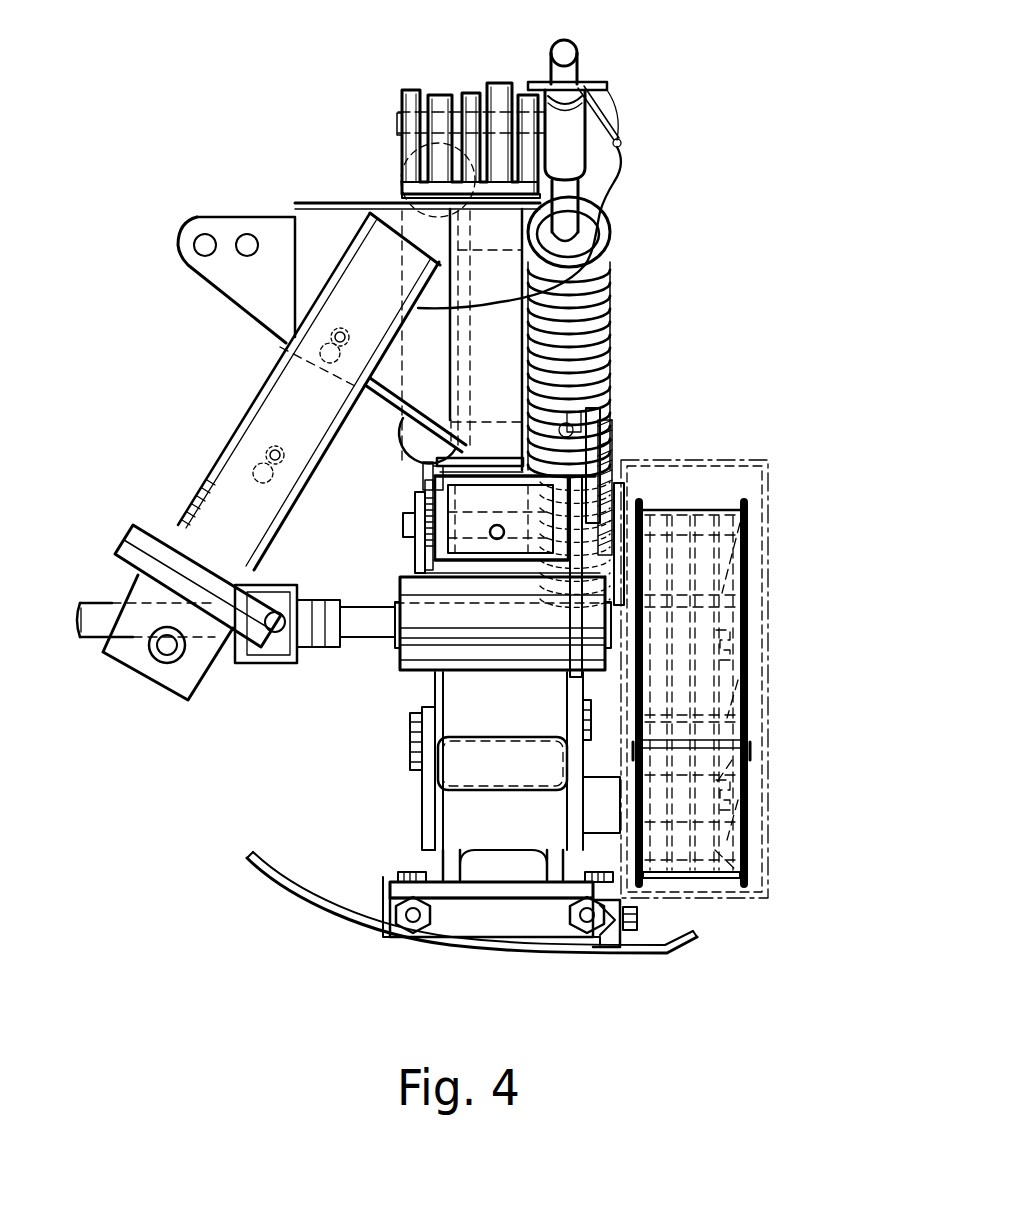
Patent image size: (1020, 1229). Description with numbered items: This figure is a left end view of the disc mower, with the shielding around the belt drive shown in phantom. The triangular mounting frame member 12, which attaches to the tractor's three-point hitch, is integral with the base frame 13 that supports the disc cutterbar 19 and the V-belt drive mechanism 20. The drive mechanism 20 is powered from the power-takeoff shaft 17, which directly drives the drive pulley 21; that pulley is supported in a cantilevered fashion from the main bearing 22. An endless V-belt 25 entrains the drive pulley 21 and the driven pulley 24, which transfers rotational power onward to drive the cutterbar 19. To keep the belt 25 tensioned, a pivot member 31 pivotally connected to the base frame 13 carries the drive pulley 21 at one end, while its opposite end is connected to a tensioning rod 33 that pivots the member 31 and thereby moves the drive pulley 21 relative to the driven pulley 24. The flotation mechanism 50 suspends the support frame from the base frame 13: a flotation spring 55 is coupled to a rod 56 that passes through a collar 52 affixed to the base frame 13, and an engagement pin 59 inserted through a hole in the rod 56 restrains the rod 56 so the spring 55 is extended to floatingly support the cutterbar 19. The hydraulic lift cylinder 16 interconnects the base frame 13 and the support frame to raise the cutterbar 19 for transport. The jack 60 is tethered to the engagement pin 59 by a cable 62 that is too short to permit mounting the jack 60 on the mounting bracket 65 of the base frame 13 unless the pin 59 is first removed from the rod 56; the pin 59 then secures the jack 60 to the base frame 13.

The mounting frame member 12 is at (172, 675).
The base frame 13 is at (497, 333).
The hydraulic lift cylinder 16 is at (423, 440).
The power-takeoff (PTO) shaft 17 is at (113, 603).
The disc cutterbar 19 is at (535, 935).
The V-belt drive mechanism 20 is at (736, 453).
The drive pulley 21 is at (752, 577).
The main bearing 22 is at (410, 660).
The driven pulley 24 is at (750, 847).
The V-belt 25 is at (700, 677).
The pivot member 31 is at (606, 412).
The tensioning rod 33 is at (612, 362).
The flotation mechanism 50 is at (652, 163).
The collar 52 is at (575, 132).
The flotation spring 55 is at (600, 258).
The rod 56 is at (564, 50).
The engagement pin 59 is at (592, 86).
The jack 60 is at (290, 403).
The cable 62 is at (612, 190).
The mounting bracket 65 is at (493, 518).